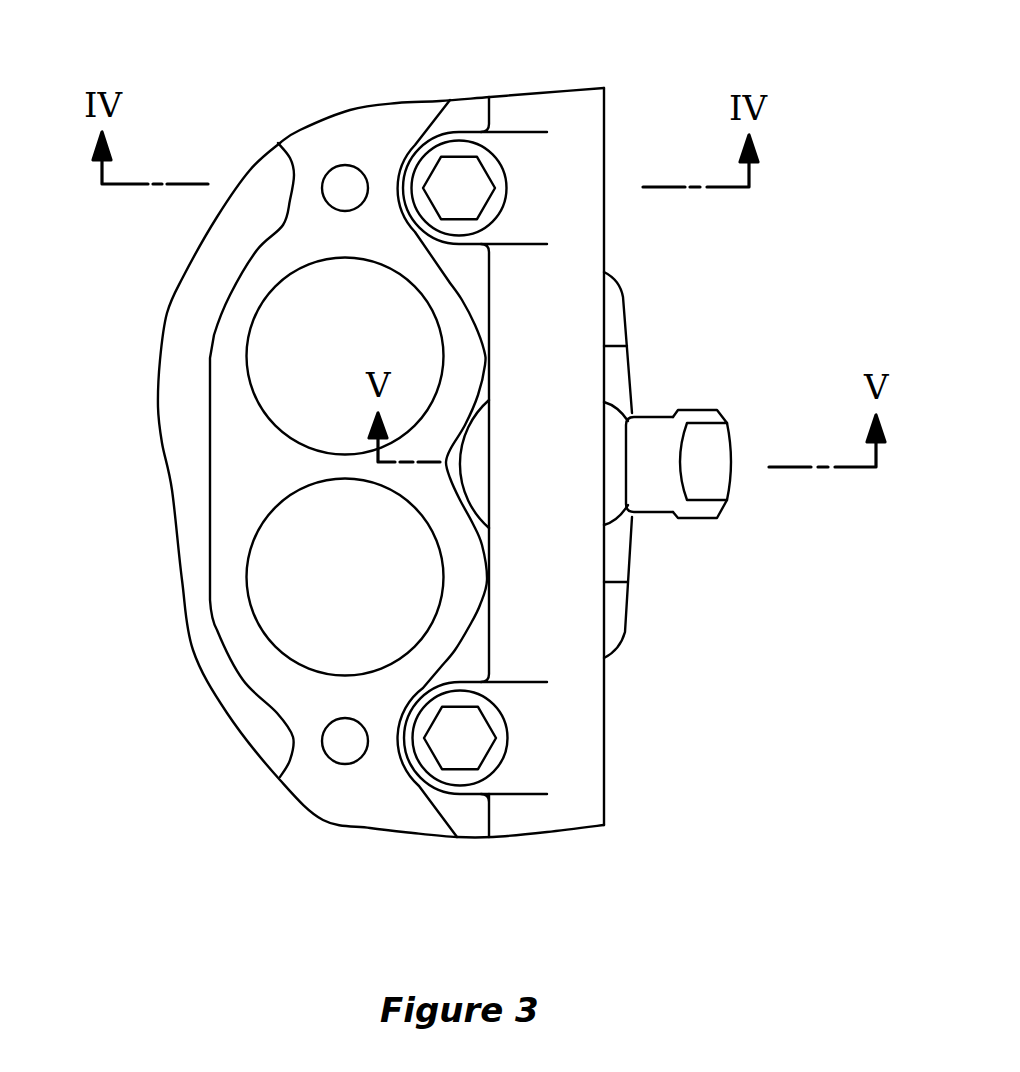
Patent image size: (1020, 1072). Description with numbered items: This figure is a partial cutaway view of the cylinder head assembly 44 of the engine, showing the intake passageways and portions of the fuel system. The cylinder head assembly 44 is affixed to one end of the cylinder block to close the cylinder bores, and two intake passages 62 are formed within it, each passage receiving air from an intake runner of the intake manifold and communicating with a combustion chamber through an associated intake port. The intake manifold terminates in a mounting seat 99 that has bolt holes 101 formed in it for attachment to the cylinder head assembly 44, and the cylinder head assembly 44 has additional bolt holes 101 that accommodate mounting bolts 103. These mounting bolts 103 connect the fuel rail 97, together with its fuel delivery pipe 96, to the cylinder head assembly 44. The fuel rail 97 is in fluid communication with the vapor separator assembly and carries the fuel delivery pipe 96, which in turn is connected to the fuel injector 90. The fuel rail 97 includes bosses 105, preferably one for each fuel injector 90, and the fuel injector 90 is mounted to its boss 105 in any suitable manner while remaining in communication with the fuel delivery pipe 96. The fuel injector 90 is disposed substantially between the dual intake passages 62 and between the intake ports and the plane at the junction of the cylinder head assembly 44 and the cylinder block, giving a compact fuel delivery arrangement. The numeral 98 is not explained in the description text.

The cylinder head assembly 44 is at (195, 655).
The intake passages 62 is at (251, 318).
The fuel injector 90 is at (657, 413).
The fuel delivery pipe 96 is at (580, 800).
The fuel rail 97 is at (605, 697).
The bridge 98 is at (342, 467).
The mounting seat 99 is at (280, 675).
The bolt holes 101 is at (362, 188).
The mounting bolts 103 is at (457, 172).
The bosses 105 is at (613, 468).